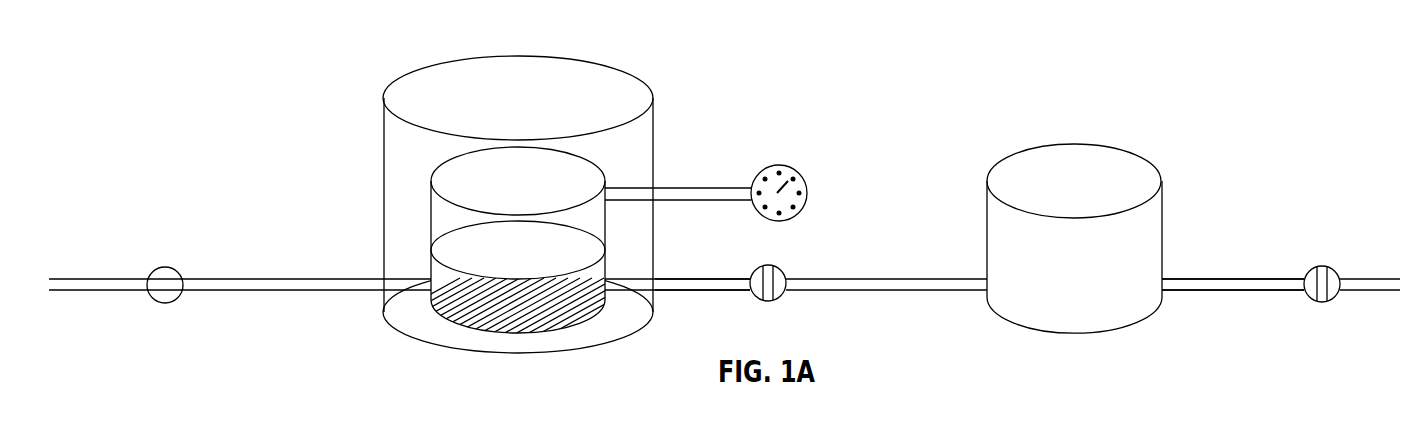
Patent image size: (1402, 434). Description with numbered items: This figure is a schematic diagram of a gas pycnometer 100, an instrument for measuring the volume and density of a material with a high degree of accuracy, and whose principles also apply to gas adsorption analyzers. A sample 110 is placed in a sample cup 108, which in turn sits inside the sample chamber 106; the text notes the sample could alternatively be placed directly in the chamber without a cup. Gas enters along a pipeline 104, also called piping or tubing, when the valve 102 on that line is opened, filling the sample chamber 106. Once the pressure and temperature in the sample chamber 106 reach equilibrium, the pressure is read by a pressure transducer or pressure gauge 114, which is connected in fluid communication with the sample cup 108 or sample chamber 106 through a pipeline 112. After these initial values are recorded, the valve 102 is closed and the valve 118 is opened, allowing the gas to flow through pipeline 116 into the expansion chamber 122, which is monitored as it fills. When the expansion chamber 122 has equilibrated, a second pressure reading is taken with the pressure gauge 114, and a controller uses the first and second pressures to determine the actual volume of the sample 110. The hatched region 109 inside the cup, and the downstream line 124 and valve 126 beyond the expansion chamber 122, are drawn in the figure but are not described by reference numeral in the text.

The gas pycnometer 100 is at (245, 122).
The valve 102 is at (166, 267).
The pipeline 104 is at (269, 278).
The sample chamber 106 is at (384, 163).
The sample cup 108 is at (431, 222).
The fluid 109 is at (497, 194).
The sample 110 is at (437, 298).
The pipeline 112 is at (718, 200).
The pressure gauge 114 is at (758, 172).
The pipeline 116 is at (722, 278).
The valve 118 is at (756, 300).
The expansion chamber 122 is at (987, 238).
The pipe section 124 is at (1247, 277).
The valve 126 is at (1308, 300).